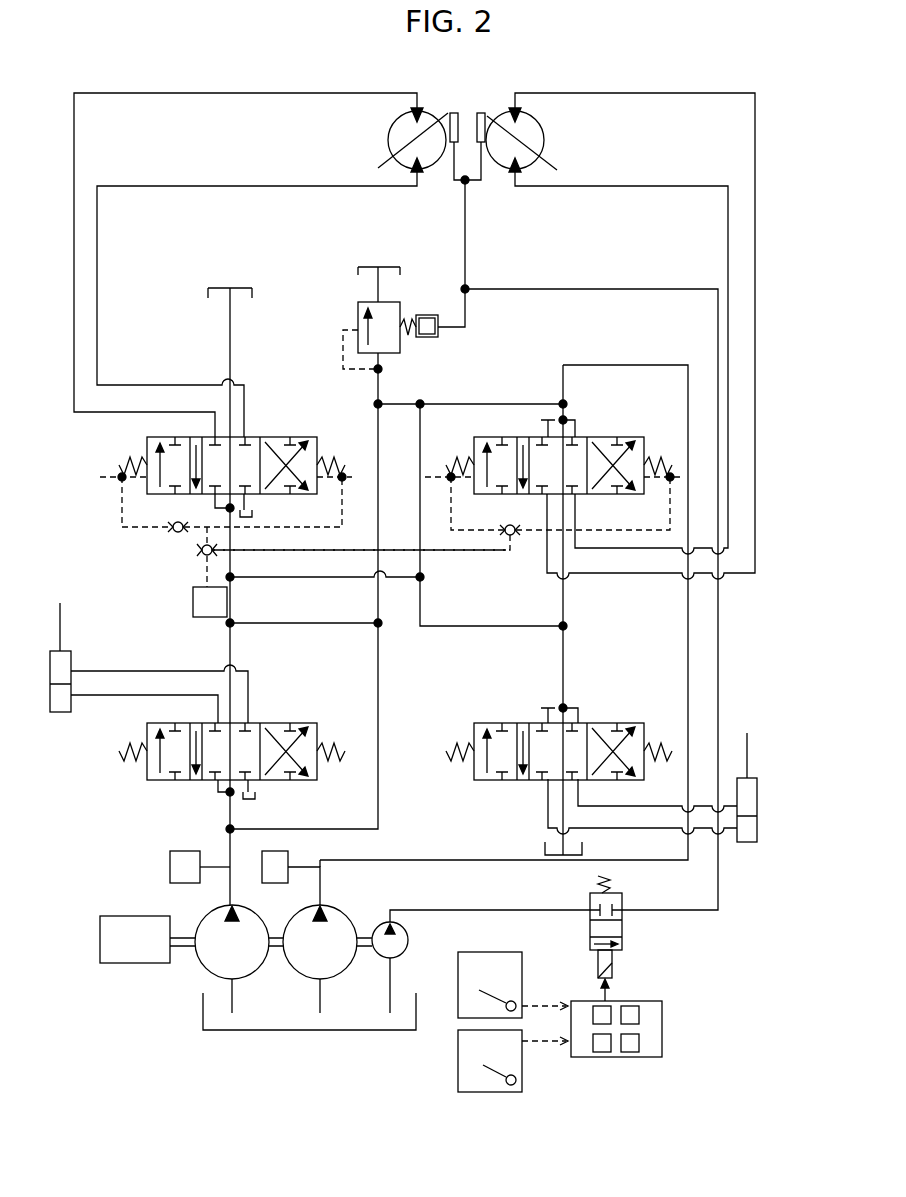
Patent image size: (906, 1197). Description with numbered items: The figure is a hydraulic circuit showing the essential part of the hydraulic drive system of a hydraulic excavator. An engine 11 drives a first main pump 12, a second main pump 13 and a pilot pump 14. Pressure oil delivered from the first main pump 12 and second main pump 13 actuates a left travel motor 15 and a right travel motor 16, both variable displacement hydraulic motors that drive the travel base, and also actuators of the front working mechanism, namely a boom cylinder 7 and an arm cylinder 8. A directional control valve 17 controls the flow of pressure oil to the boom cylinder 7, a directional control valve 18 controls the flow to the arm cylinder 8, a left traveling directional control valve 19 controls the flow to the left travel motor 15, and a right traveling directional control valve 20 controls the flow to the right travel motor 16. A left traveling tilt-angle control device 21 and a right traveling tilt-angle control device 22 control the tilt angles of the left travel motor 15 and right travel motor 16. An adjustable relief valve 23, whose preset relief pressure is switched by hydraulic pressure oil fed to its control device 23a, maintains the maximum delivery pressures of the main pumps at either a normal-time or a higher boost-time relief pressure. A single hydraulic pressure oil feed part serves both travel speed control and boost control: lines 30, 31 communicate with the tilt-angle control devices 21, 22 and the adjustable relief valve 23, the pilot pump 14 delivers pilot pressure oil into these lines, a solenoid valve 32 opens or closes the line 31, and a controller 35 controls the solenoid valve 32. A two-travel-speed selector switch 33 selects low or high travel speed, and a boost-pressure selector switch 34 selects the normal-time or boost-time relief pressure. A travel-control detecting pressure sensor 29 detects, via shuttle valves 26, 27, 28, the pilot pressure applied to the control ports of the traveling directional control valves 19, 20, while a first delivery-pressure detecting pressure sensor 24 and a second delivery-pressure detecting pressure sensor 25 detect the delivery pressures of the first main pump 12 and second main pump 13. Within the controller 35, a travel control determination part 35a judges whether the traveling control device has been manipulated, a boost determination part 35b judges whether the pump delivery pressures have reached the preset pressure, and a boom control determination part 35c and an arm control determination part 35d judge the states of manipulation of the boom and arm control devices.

The boom cylinder 7 is at (48, 668).
The arm cylinder 8 is at (759, 782).
The engine 11 is at (138, 964).
The first main pump 12 is at (201, 966).
The second main pump 13 is at (294, 971).
The pilot pump 14 is at (410, 936).
The left travel motor 15 is at (387, 129).
The right travel motor 16 is at (545, 129).
The directional control valve 17 is at (266, 722).
The directional control valve 18 is at (596, 722).
The left traveling directional control valve 19 is at (259, 436).
The right traveling directional control valve 20 is at (612, 436).
The left traveling tilt-angle control device 21 is at (453, 146).
The right traveling tilt-angle control device 22 is at (479, 146).
The adjustable relief valve 23 is at (357, 312).
The control device 23a is at (432, 340).
The first delivery-pressure detecting pressure sensor 24 is at (170, 861).
The second delivery-pressure detecting pressure sensor 25 is at (290, 856).
The shuttle valve 26 is at (171, 531).
The shuttle valve 27 is at (512, 538).
The shuttle valve 28 is at (196, 557).
The travel-control detecting pressure sensor 29 is at (192, 605).
The line 30 is at (467, 262).
The line 31 is at (722, 650).
The solenoid valve 32 is at (620, 926).
The two-travel-speed selector switch 33 is at (522, 969).
The boost-pressure selector switch 34 is at (522, 1072).
The controller 35 is at (637, 1038).
The travel control determination part 35a is at (594, 1010).
The boost determination part 35b is at (633, 1006).
The boom control determination part 35c is at (600, 1052).
The arm control determination part 35d is at (638, 1043).